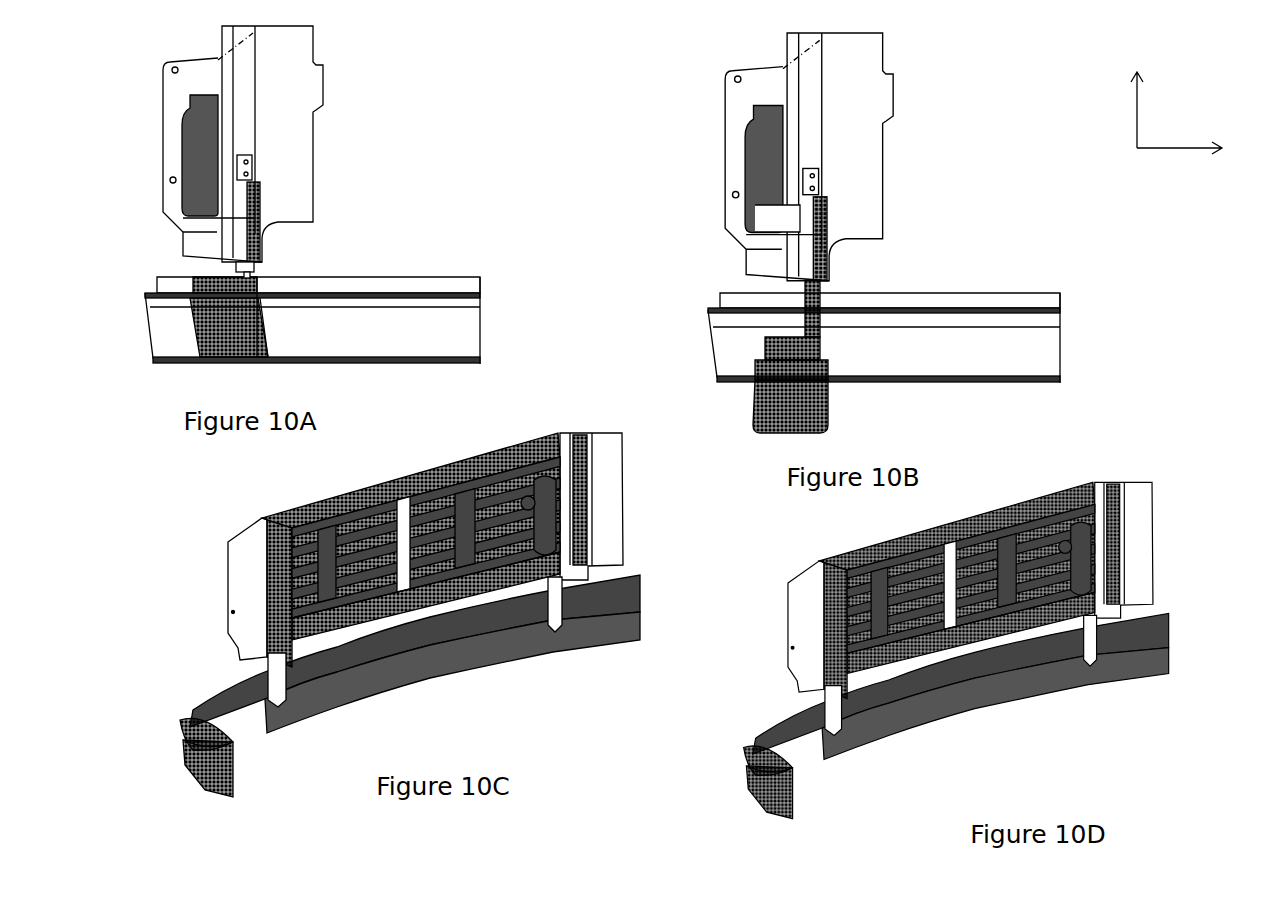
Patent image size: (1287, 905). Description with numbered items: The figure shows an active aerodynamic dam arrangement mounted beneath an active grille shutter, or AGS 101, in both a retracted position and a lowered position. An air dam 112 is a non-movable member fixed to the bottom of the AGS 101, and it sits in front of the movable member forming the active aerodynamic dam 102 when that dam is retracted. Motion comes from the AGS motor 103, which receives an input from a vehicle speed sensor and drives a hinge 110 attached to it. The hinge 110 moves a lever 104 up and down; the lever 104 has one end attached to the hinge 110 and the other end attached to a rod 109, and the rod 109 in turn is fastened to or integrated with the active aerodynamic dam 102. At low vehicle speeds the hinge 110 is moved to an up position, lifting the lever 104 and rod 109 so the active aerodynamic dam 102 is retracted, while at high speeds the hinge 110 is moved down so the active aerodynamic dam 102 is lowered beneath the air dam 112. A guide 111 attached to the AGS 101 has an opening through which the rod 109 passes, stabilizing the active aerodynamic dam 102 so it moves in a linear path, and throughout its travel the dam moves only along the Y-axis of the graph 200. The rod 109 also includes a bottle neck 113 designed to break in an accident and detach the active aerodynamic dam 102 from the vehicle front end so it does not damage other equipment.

In FIG. 10A, the AGS 101 is at (272, 82).
In FIG. 10B, the AGS 101 is at (863, 102).
In FIG. 10C, the AGS 101 is at (243, 545).
In FIG. 10D, the AGS 101 is at (803, 600).
In FIG. 10A, the active aerodynamic dam 102 is at (220, 335).
In FIG. 10B, the active aerodynamic dam 102 is at (795, 395).
In FIG. 10C, the active aerodynamic dam 102 is at (477, 670).
In FIG. 10D, the active aerodynamic dam 102 is at (1063, 713).
In FIG. 10A, the AGS motor 103 is at (205, 140).
In FIG. 10B, the AGS motor 103 is at (762, 148).
In FIG. 10C, the AGS motor 103 is at (562, 470).
In FIG. 10D, the AGS motor 103 is at (1093, 513).
In FIG. 10A, the lever 104 is at (242, 165).
In FIG. 10B, the lever 104 is at (818, 220).
In FIG. 10A, the rod 109 is at (250, 217).
In FIG. 10B, the rod 109 is at (820, 258).
In FIG. 10C, the rod 109 is at (532, 555).
In FIG. 10D, the rod 109 is at (1100, 653).
In FIG. 10B, the hinge 110 is at (800, 205).
In FIG. 10C, the hinge 110 is at (522, 497).
In FIG. 10D, the hinge 110 is at (1093, 580).
In FIG. 10C, the guide 111 is at (587, 642).
In FIG. 10D, the guide 111 is at (1113, 620).
In FIG. 10A, the air dam 112 is at (443, 292).
In FIG. 10B, the air dam 112 is at (1035, 348).
In FIG. 10C, the air dam 112 is at (188, 720).
In FIG. 10D, the air dam 112 is at (750, 770).
In FIG. 10A, the bottle neck 113 is at (250, 225).
In FIG. 10B, the bottle neck 113 is at (812, 290).
In FIG. 10C, the bottle neck 113 is at (277, 680).
In FIG. 10D, the bottle neck 113 is at (910, 740).
In FIG. 10B, the graph 200 is at (1192, 111).